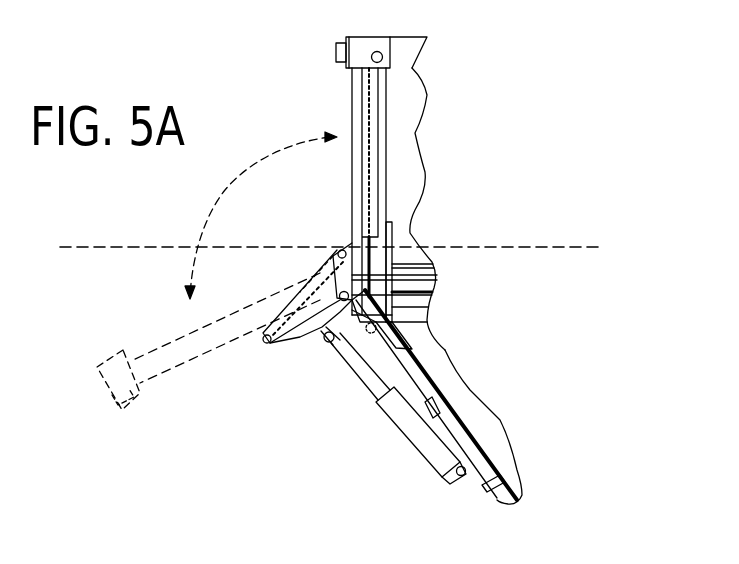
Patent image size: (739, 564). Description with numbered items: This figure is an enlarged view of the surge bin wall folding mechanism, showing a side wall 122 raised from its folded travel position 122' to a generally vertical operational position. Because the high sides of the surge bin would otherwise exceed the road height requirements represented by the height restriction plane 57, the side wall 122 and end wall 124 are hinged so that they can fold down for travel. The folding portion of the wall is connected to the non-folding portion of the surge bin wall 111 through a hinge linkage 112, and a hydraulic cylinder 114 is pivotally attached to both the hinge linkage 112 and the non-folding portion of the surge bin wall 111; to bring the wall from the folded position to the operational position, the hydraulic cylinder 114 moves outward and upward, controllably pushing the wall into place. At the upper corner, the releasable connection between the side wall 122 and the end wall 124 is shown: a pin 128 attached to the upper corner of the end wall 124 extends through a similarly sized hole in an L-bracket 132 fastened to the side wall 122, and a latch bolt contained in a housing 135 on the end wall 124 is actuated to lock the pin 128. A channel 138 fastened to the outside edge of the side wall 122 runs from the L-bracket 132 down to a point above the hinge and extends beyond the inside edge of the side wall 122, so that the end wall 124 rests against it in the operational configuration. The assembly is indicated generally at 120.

The height restriction plane 57 is at (579, 245).
The non-folding portion of the surge bin wall 111 is at (413, 360).
The hinge linkage 112 is at (297, 305).
The hydraulic cylinder 114 is at (415, 433).
The mounting assembly 120 is at (341, 68).
The side wall 122 is at (328, 195).
The travel position of side wall 122' is at (217, 271).
The end wall 124 is at (412, 158).
The pin 128 is at (382, 58).
The L-bracket 132 is at (362, 48).
The housing 135 is at (336, 52).
The channel 138 is at (362, 168).